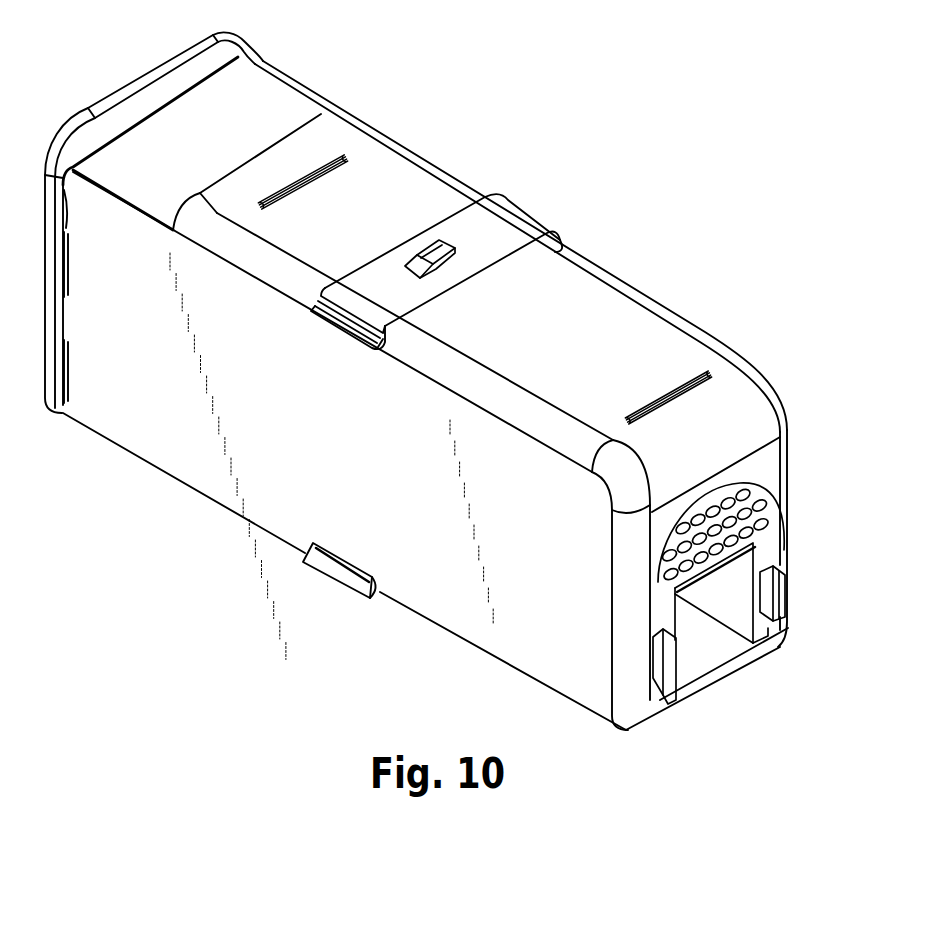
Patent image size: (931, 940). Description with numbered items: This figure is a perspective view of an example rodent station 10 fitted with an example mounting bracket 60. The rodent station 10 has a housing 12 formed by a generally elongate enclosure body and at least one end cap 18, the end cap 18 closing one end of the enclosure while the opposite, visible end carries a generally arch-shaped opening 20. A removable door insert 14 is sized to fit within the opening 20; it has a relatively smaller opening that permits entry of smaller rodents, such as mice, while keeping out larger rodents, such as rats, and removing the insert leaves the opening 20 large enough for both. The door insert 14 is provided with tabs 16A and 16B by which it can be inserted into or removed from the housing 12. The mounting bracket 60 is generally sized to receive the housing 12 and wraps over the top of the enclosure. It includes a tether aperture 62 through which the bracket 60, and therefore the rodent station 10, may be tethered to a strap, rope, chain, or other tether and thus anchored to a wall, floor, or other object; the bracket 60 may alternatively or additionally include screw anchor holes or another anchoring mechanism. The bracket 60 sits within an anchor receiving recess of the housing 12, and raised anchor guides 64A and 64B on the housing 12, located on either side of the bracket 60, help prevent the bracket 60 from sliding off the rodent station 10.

The rodent station 10 is at (455, 100).
The housing 12 is at (300, 85).
The door insert 14 is at (772, 517).
The tab 16A is at (672, 662).
The tab 16B is at (775, 597).
The end cap 18 is at (160, 70).
The opening 20 is at (695, 640).
The mounting bracket 60 is at (503, 223).
The tether aperture 62 is at (428, 247).
The raised anchor guide 64A is at (330, 155).
The raised anchor guide 64B is at (687, 372).